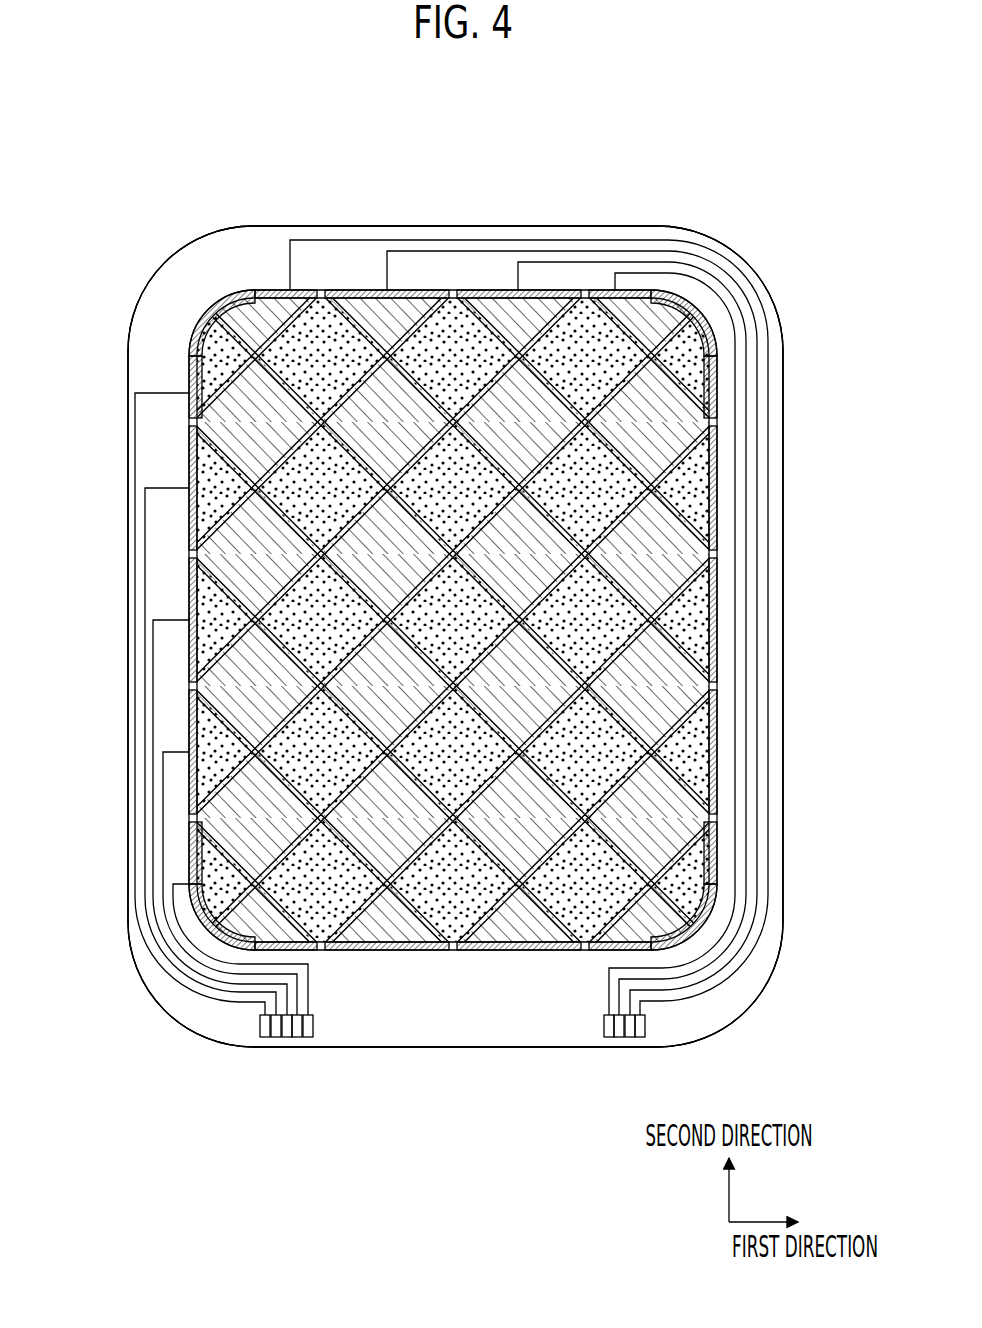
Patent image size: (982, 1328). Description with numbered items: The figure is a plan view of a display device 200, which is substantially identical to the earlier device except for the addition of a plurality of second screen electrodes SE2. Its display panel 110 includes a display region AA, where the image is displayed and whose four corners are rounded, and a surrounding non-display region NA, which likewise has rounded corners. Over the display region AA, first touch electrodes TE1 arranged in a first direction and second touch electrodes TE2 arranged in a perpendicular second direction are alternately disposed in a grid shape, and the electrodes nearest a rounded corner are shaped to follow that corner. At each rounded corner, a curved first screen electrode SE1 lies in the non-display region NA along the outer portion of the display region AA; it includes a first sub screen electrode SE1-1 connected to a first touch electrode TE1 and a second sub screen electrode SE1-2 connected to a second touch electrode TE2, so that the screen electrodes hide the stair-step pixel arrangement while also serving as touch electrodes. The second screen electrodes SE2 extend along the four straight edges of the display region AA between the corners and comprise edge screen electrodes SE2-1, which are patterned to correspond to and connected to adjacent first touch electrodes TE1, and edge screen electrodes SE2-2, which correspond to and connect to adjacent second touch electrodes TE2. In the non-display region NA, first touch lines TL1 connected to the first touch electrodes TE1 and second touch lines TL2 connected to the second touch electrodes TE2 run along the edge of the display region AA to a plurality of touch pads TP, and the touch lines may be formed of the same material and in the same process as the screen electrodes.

The display device 200 is at (758, 86).
The display panel 110 is at (783, 596).
The display region AA is at (716, 418).
The non-display region NA is at (784, 496).
The first touch electrodes TE1 is at (316, 386).
The second touch electrodes TE2 is at (300, 292).
The first screen electrodes SE1 is at (455, 625).
The (1-1)th screen electrode SE1-1 is at (194, 346).
The (1-2)th screen electrode SE1-2 is at (215, 314).
The second screen electrodes SE2 is at (452, 673).
The (2-1)th screen electrodes SE2-1 is at (190, 500).
The (2-2)th screen electrodes SE2-2 is at (602, 292).
The first touch lines TL1 is at (136, 776).
The second touch lines TL2 is at (770, 819).
The touch pads TP is at (265, 1037).